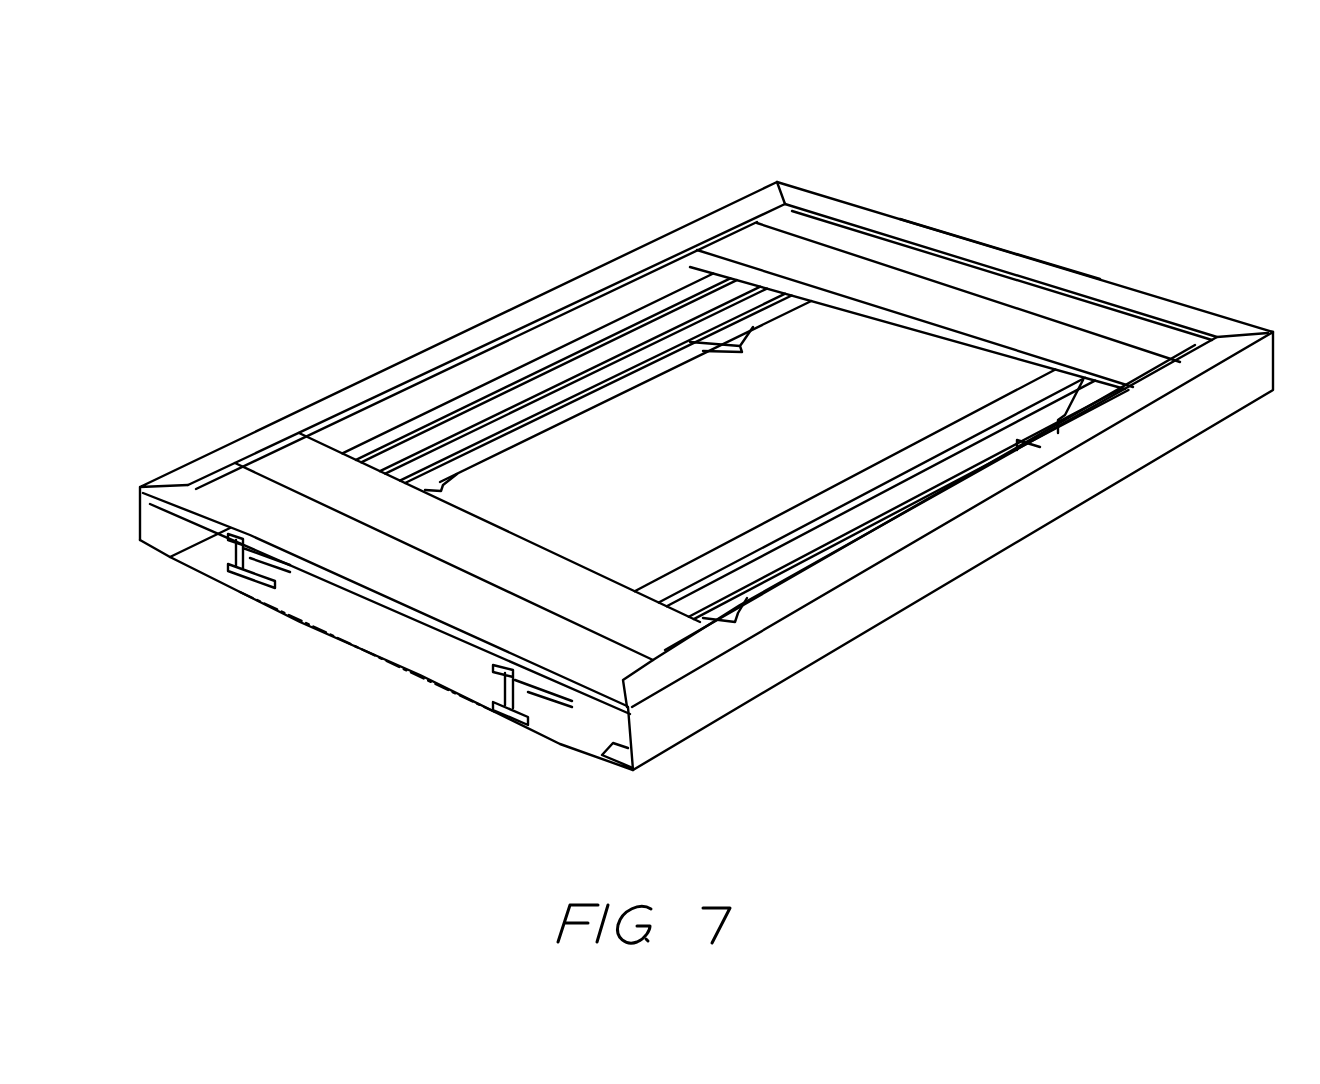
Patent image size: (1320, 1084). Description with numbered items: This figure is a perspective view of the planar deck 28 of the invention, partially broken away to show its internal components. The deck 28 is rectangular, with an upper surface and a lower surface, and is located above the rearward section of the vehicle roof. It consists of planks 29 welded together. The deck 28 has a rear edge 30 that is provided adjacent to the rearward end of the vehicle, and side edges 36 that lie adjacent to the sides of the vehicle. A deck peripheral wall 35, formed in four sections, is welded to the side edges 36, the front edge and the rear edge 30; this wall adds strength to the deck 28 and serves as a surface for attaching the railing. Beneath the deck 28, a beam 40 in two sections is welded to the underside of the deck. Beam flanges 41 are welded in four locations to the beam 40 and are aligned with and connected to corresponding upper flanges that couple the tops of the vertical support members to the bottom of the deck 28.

The planar deck 28 is at (395, 268).
The planks 29 is at (287, 460).
The rear edge 30 is at (1130, 283).
The deck peripheral wall 35 is at (1013, 253).
The side edges 36 is at (528, 300).
The beam 40 is at (247, 582).
The beam flanges 41 is at (457, 474).